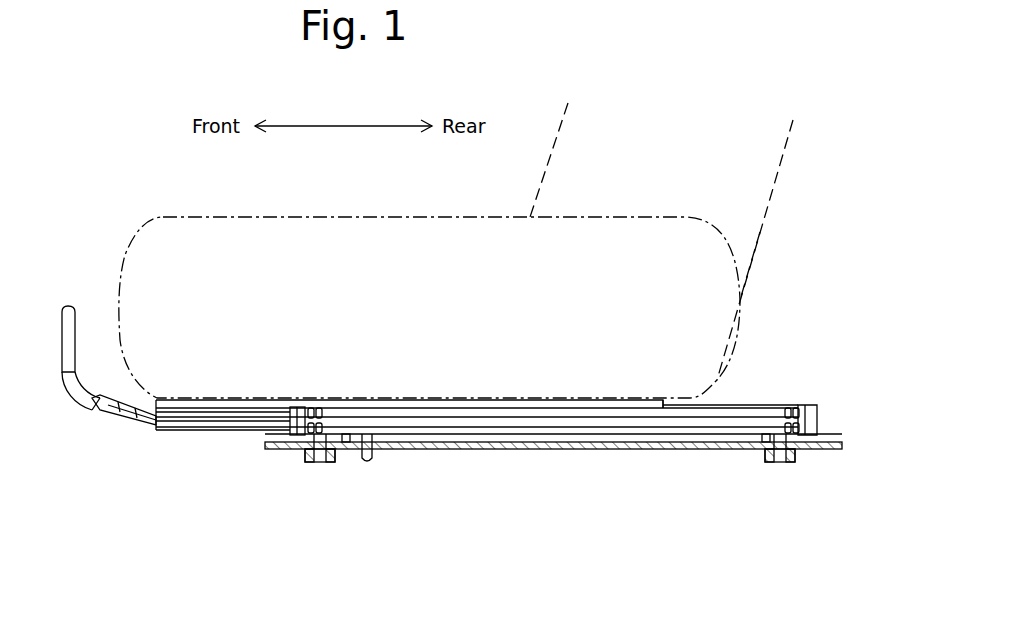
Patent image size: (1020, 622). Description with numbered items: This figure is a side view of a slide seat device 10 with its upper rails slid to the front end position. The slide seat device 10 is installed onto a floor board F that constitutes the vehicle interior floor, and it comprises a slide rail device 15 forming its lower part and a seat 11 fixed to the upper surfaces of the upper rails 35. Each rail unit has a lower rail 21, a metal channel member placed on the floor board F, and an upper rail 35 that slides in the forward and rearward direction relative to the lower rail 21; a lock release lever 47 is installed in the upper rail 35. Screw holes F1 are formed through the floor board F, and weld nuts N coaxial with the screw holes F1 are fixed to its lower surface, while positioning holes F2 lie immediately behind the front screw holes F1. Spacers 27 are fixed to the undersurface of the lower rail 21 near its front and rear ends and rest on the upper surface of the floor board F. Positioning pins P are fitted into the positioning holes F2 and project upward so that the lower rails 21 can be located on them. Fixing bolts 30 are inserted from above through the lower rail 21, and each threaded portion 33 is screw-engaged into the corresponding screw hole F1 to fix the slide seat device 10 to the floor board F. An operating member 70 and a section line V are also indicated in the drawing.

The slide seat device 10 is at (170, 178).
The seat 11 is at (540, 183).
The slide rail device 15 is at (752, 355).
The lower rail 21 is at (531, 428).
The spacer 27 is at (305, 447).
The fixing bolt 30 is at (561, 497).
The threaded portion 33 is at (320, 460).
The upper rail 35 is at (234, 410).
The lock release lever 47 is at (105, 400).
The operation handle 70 is at (72, 320).
The floor board F is at (826, 438).
The screw hole F1 is at (327, 437).
The positioning hole F2 is at (367, 440).
The weld nut N is at (318, 455).
The positioning pin P is at (372, 458).
The section line V is at (322, 356).